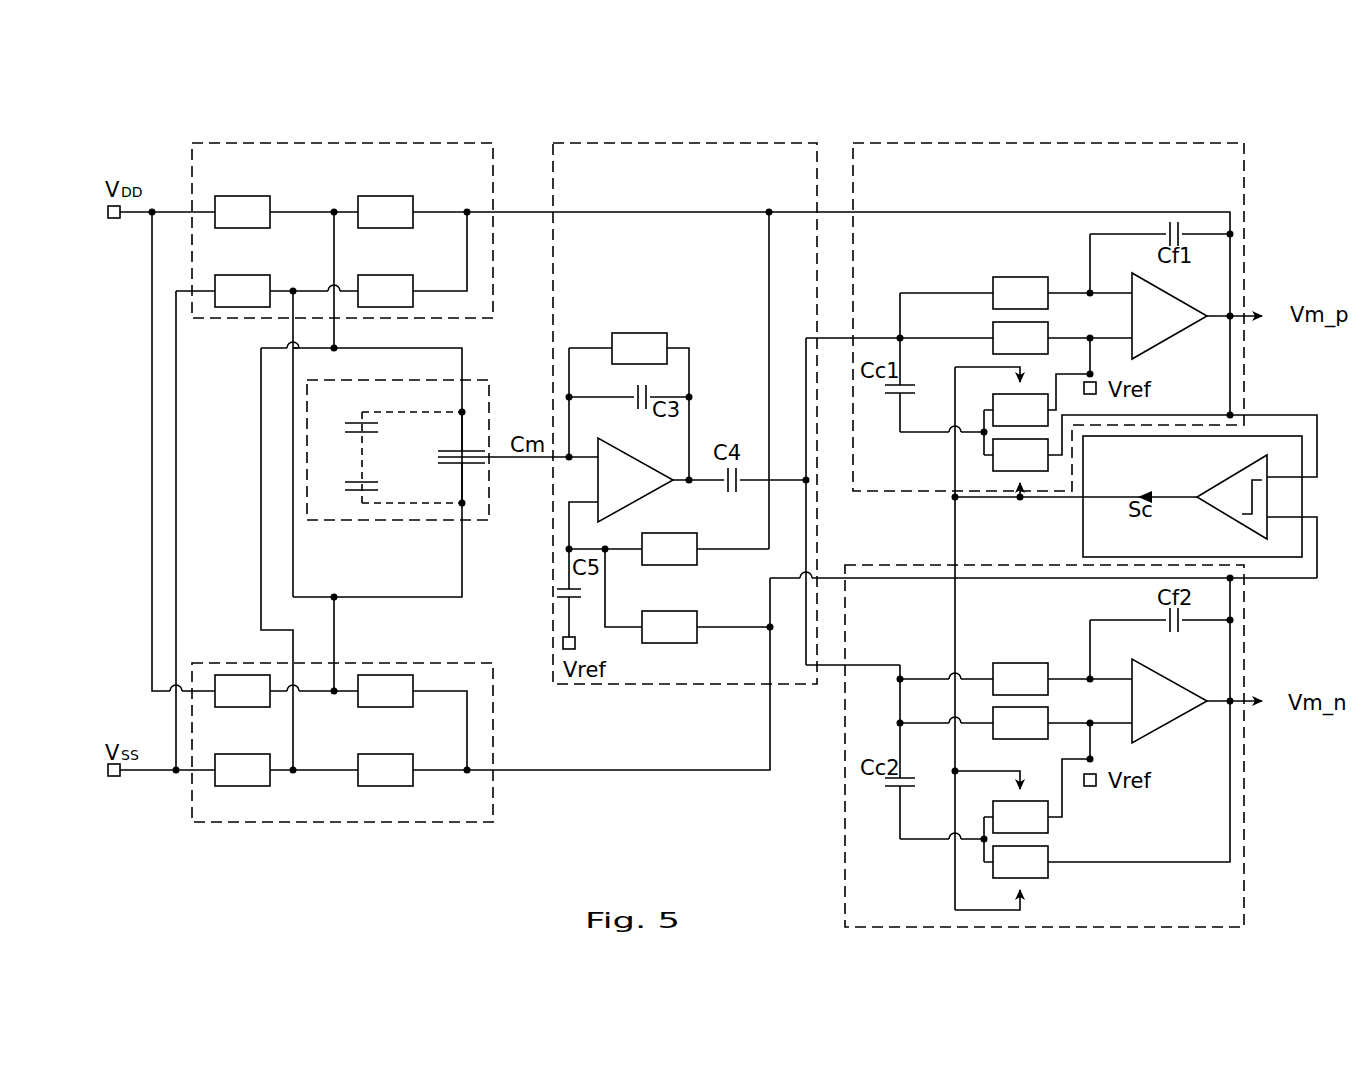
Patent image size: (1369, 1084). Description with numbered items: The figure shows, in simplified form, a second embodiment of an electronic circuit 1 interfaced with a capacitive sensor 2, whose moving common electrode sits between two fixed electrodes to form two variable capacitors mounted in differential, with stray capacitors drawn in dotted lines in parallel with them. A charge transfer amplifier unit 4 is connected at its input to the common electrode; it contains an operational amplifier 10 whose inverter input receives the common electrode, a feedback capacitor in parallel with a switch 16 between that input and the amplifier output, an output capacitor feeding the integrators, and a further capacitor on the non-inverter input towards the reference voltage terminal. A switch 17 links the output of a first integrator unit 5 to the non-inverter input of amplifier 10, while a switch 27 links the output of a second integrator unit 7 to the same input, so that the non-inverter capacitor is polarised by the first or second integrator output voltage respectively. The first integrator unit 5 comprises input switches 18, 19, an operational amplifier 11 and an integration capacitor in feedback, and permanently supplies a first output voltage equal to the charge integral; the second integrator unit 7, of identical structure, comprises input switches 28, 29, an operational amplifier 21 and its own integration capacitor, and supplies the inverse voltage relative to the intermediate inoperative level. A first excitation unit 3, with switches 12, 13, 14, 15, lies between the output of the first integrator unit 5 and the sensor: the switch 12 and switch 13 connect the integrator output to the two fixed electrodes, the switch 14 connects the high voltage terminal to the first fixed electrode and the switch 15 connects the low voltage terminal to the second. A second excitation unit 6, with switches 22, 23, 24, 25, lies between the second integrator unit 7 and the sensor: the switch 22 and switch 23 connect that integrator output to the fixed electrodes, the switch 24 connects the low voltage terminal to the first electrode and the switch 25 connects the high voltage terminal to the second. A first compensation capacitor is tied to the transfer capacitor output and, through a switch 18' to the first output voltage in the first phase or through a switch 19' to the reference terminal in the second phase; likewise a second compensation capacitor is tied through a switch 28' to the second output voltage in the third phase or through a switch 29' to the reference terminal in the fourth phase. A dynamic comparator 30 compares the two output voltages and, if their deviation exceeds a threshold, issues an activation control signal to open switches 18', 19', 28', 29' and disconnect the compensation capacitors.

The electronic circuit 1 is at (1274, 209).
The capacitive sensor 2 is at (402, 530).
The first excitation unit 3 is at (470, 140).
The charge transfer amplifier unit 4 is at (766, 141).
The first integrator unit 5 is at (1185, 141).
The second excitation unit 6 is at (496, 799).
The second integrator unit 7 is at (1242, 844).
The operational amplifier 10 is at (628, 492).
The operational amplifier 11 is at (1184, 319).
The first switch 12 is at (404, 199).
The second switch 13 is at (404, 284).
The third switch 14 is at (216, 200).
The fourth switch 15 is at (246, 307).
The switch 16 is at (665, 336).
The switch 17 is at (671, 566).
The input switch 18 is at (999, 332).
The switch 18' is at (1013, 485).
The input switch 19 is at (1026, 271).
The switch 19' is at (1001, 397).
The operational amplifier 21 is at (1184, 707).
The first switch 22 is at (402, 786).
The second switch 23 is at (402, 707).
The third switch 24 is at (220, 780).
The fourth switch 25 is at (244, 675).
The switch 27 is at (671, 644).
The input switch 28 is at (1024, 741).
The switch 28' is at (1064, 868).
The input switch 29 is at (1026, 657).
The switch 29' is at (1064, 817).
The dynamic comparator 30 is at (1303, 499).